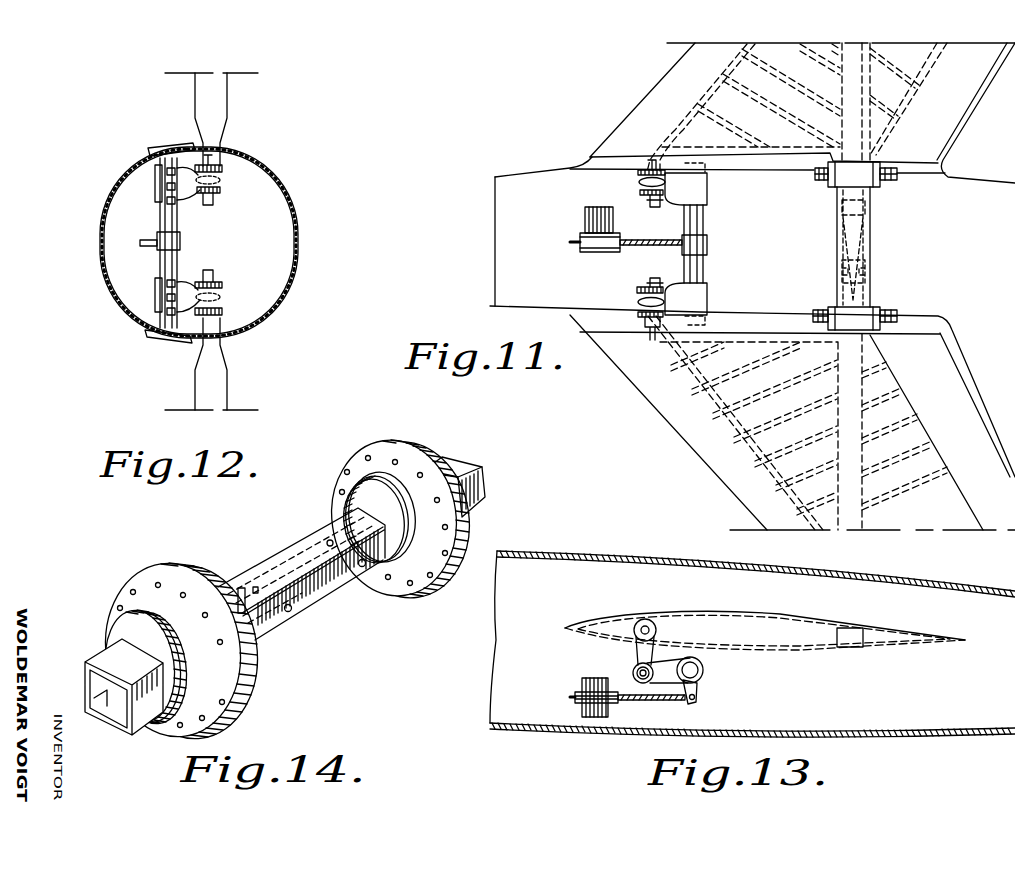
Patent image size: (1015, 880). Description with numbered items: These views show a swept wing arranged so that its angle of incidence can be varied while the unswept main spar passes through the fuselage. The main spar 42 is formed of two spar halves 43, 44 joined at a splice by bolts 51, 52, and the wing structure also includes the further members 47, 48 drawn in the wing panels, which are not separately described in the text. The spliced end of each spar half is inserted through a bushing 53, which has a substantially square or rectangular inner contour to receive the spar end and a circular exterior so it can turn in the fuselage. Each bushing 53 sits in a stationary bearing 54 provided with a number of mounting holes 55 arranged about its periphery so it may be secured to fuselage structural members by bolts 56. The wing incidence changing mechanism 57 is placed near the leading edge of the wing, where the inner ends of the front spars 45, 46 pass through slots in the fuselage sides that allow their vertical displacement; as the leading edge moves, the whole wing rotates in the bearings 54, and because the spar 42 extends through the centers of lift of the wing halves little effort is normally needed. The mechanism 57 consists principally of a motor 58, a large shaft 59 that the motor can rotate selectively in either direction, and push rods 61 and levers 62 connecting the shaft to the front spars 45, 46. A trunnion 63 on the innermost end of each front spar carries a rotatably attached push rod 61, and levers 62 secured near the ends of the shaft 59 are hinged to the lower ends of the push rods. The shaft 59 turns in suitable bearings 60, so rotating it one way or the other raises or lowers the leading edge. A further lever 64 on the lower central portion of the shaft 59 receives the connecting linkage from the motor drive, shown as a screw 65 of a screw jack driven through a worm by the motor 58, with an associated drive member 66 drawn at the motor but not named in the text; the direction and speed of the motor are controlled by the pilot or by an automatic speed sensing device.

In FIG. 11, the main spar 42 is at (885, 112).
In FIG. 11, the spar half 43 is at (863, 130).
In FIG. 14, the spar half 43 is at (452, 465).
In FIG. 11, the spar half 44 is at (855, 473).
In FIG. 14, the spar half 44 is at (112, 669).
In FIG. 11, the front spar 45 is at (708, 83).
In FIG. 12, the front spar 45 is at (222, 100).
In FIG. 11, the front spar 46 is at (710, 403).
In FIG. 12, the front spar 46 is at (215, 368).
In FIG. 11, the wing panel 47 is at (928, 67).
In FIG. 11, the wing spar 48 is at (900, 403).
In FIG. 11, the bolt 51 is at (870, 207).
In FIG. 11, the bolt 52 is at (868, 268).
In FIG. 11, the bushing 53 is at (845, 178).
In FIG. 14, the bushing 53 is at (397, 560).
In FIG. 11, the stationary bearing 54 is at (822, 180).
In FIG. 14, the stationary bearing 54 is at (382, 455).
In FIG. 14, the mounting hole 55 is at (457, 520).
In FIG. 11, the bolt 56 is at (897, 182).
In FIG. 11, the wing incidence changing mechanism 57 is at (717, 246).
In FIG. 11, the motor 58 is at (585, 213).
In FIG. 13, the motor 58 is at (582, 683).
In FIG. 11, the large shaft 59 is at (703, 275).
In FIG. 12, the large shaft 59 is at (162, 220).
In FIG. 13, the large shaft 59 is at (703, 670).
In FIG. 12, the bearing 60 is at (174, 148).
In FIG. 11, the push rod 61 is at (640, 182).
In FIG. 12, the push rod 61 is at (180, 185).
In FIG. 13, the push rod 61 is at (638, 645).
In FIG. 11, the lever 62 is at (707, 185).
In FIG. 13, the lever 62 is at (632, 677).
In FIG. 11, the trunnion 63 is at (655, 201).
In FIG. 12, the trunnion 63 is at (212, 280).
In FIG. 12, the lever 64 is at (150, 243).
In FIG. 13, the lever 64 is at (703, 689).
In FIG. 11, the screw 65 is at (668, 247).
In FIG. 13, the screw 65 is at (666, 700).
In FIG. 11, the shaft 66 is at (578, 245).
In FIG. 13, the shaft 66 is at (575, 700).